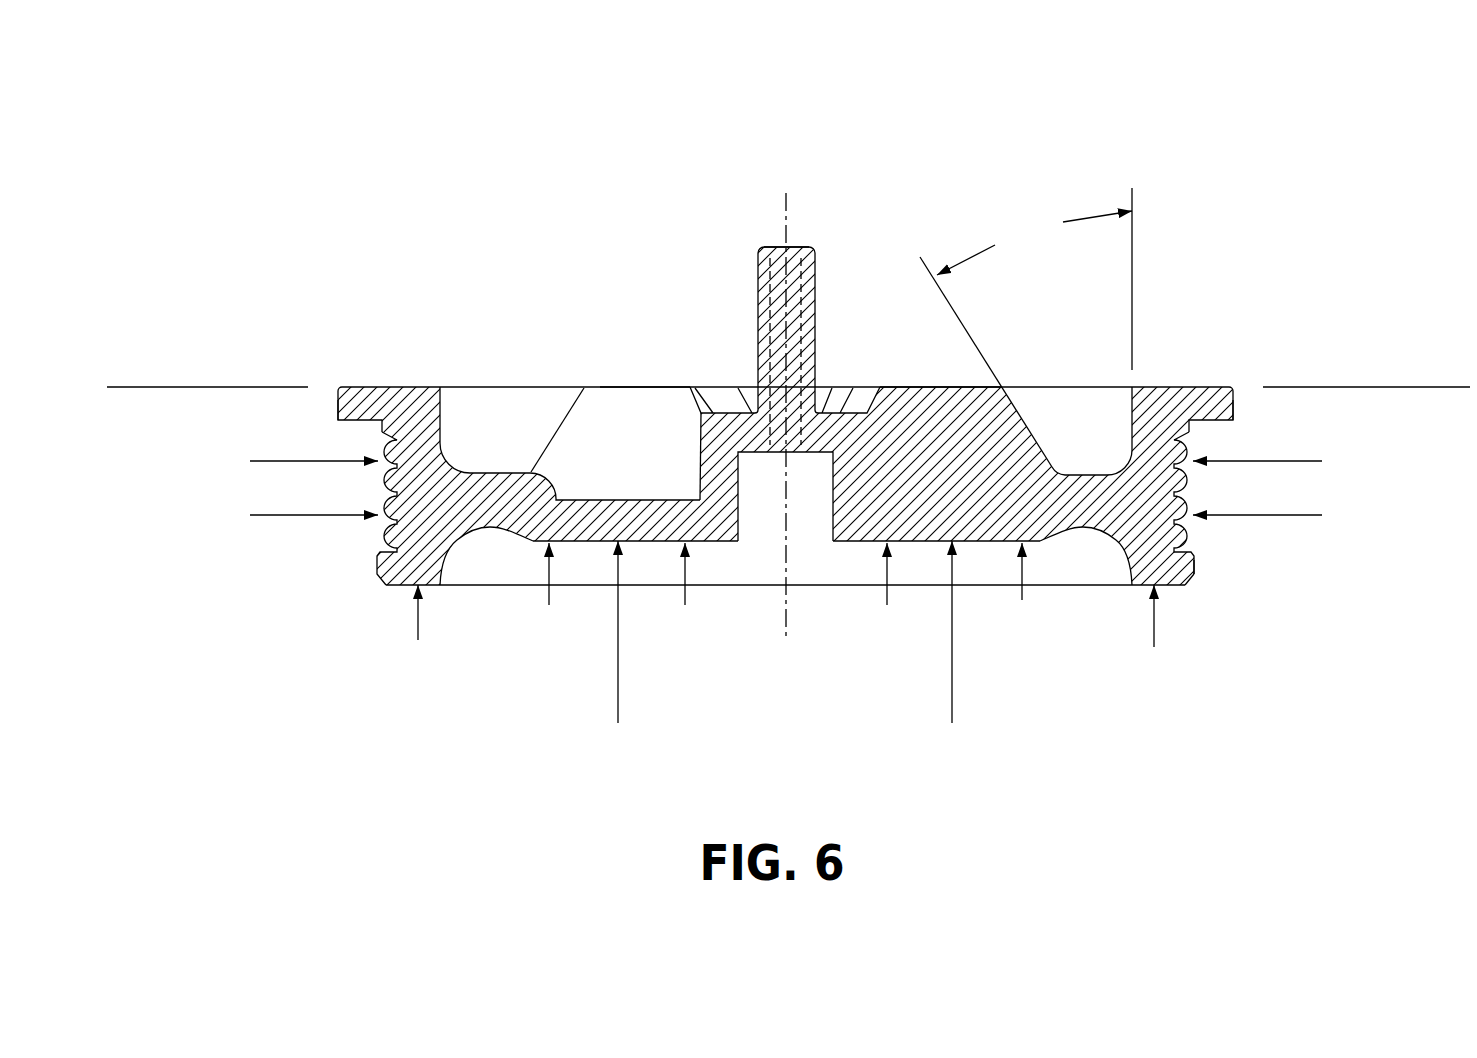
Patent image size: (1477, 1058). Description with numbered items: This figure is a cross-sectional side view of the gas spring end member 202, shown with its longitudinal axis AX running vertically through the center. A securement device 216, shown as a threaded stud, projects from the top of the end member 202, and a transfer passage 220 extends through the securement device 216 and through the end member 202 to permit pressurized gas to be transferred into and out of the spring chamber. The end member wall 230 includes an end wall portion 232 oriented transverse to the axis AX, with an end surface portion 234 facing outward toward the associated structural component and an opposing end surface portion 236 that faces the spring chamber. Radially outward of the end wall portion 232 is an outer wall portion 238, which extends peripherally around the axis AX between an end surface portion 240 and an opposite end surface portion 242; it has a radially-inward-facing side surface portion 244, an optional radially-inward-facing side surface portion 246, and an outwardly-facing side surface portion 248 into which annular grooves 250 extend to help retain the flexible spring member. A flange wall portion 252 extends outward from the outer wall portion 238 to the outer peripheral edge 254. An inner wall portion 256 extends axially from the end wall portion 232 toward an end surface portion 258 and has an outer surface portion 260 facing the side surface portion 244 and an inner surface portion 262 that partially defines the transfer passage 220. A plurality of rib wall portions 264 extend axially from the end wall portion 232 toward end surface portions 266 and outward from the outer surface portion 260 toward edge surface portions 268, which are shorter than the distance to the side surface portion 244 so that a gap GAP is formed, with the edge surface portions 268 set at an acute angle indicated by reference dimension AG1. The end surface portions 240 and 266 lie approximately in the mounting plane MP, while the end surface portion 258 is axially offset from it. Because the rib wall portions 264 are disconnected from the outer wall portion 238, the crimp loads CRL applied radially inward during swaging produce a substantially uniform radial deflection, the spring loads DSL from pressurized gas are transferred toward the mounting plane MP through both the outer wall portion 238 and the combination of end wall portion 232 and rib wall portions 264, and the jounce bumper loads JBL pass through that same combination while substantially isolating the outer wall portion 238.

The end member 202 is at (1180, 166).
The securement device 216 is at (817, 265).
The transfer passage 220 is at (796, 247).
The end member wall 230 is at (444, 541).
The end wall portion 232 is at (599, 522).
The end surface portion 234 is at (593, 500).
The end surface portion 236 is at (568, 541).
The outer wall portion 238 is at (393, 468).
The end surface portion 240 is at (1188, 387).
The end surface portion 242 is at (1197, 586).
The side surface portion 244 is at (1237, 405).
The side surface portion 246 is at (1130, 558).
The side surface portion 248 is at (1186, 582).
The annular grooves 250 is at (1183, 485).
The flange wall portion 252 is at (363, 400).
The outer peripheral edge 254 is at (338, 407).
The inner wall portion 256 is at (718, 478).
The end surface portion 258 is at (723, 412).
The outer surface portion 260 is at (697, 447).
The inner surface portion 262 is at (833, 505).
The rib wall portions 264 is at (600, 387).
The end surface portion 266 is at (630, 387).
The edge surface portion 268 is at (567, 407).
The mounting plane MP is at (187, 387).
The longitudinal axis AX is at (783, 208).
The crimp loads CRL is at (267, 462).
The spring loads DSL is at (418, 632).
The jounce bumper loads JBL is at (620, 688).
The reference dimension AG1 is at (1034, 243).
The gap GAP is at (1090, 387).